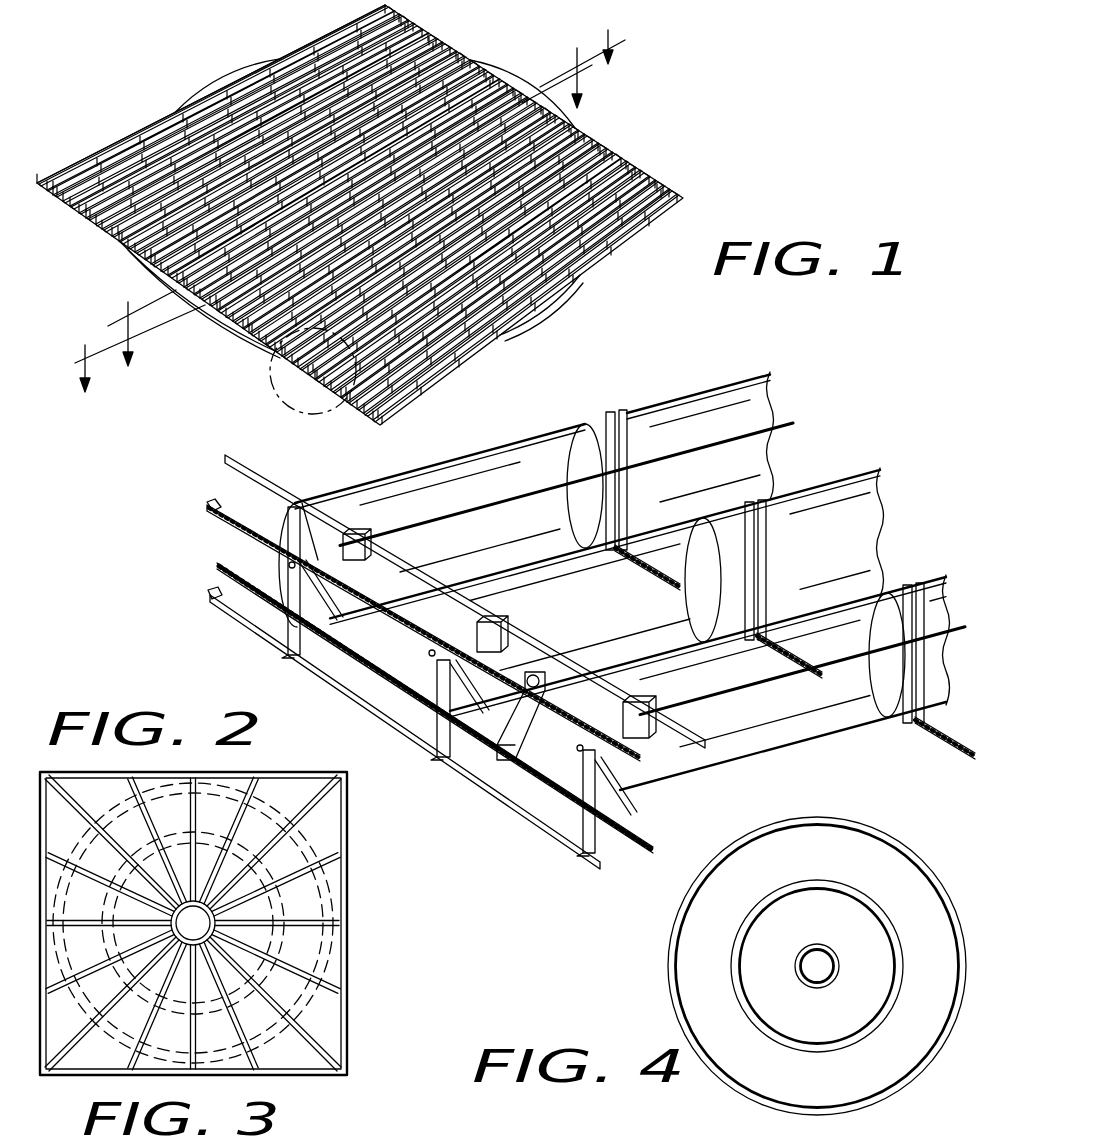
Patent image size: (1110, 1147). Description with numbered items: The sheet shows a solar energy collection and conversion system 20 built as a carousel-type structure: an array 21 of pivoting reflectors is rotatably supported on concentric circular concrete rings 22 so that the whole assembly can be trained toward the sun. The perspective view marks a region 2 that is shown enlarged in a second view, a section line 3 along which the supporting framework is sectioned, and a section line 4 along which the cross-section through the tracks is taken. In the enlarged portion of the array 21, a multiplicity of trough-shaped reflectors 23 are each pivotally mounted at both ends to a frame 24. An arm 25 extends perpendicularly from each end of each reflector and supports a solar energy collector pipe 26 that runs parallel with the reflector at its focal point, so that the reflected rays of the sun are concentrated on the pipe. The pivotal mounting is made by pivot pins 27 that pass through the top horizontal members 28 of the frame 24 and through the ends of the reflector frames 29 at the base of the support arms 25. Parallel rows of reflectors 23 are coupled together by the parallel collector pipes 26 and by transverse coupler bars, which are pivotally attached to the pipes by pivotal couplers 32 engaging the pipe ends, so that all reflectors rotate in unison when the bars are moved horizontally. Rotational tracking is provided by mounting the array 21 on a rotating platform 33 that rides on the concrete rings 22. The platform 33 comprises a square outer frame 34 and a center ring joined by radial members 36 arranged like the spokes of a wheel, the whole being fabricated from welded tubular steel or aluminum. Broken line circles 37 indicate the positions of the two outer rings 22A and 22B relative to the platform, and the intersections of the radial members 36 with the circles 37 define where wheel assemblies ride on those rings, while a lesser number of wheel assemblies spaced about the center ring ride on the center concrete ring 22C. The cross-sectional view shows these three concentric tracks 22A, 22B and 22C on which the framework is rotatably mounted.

In FIG. 1, the region 2 is at (283, 393).
In FIG. 1, the section line 3- 3 is at (366, 187).
In FIG. 1, the section line 4- 4 is at (330, 210).
In FIG. 1, the solar energy collection and conversion system 20 is at (608, 116).
In FIG. 2, the array 21 is at (368, 474).
In FIG. 1, the concentric circular concrete rings 22 is at (215, 318).
In FIG. 4, the outer concrete ring 22A is at (668, 989).
In FIG. 4, the outer concrete ring 22B is at (738, 985).
In FIG. 4, the center concrete ring 22C is at (797, 982).
In FIG. 2, the trough-shaped reflectors 23 is at (428, 472).
In FIG. 2, the frame 24 is at (380, 712).
In FIG. 2, the arm 25 is at (348, 562).
In FIG. 2, the solar energy collector pipe 26 is at (503, 500).
In FIG. 2, the pivot pins 27 is at (289, 566).
In FIG. 2, the top horizontal members 28 is at (428, 654).
In FIG. 2, the reflector frames 29 is at (288, 540).
In FIG. 2, the pivotal couplers 32 is at (362, 540).
In FIG. 3, the rotating platform 33 is at (356, 978).
In FIG. 3, the square outer frame 34 is at (345, 846).
In FIG. 3, the radial members 36 is at (244, 796).
In FIG. 3, the broken line circles 37 is at (303, 1007).